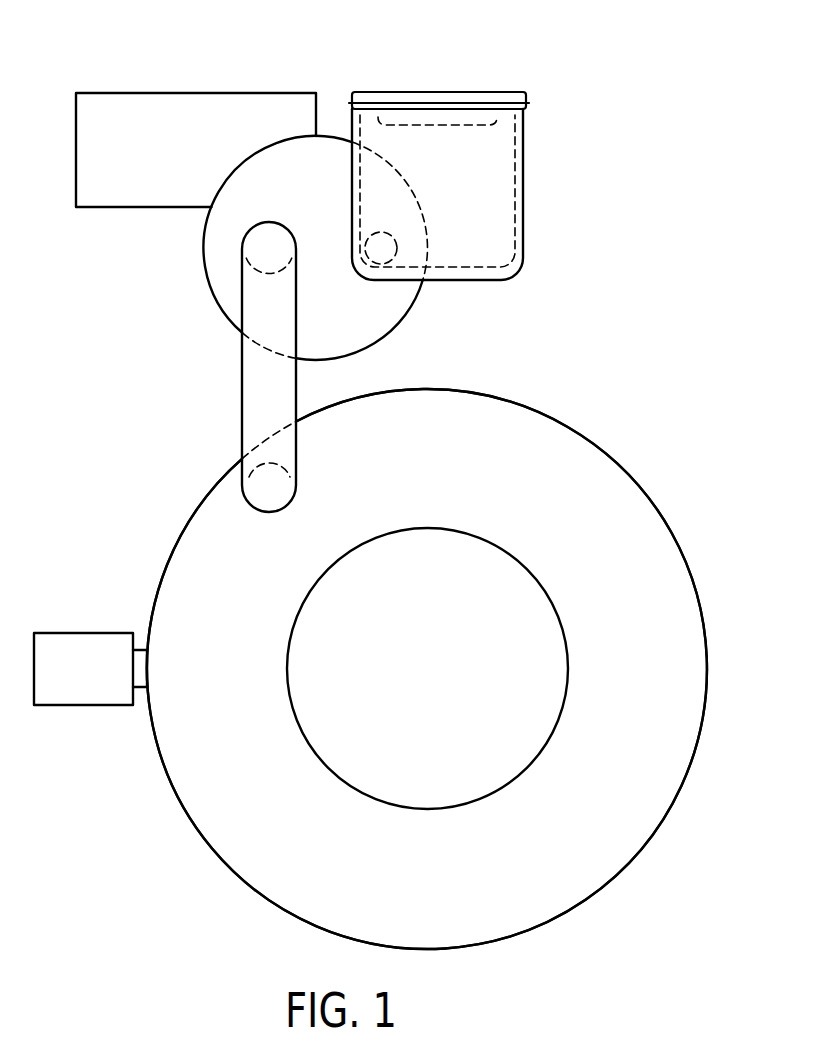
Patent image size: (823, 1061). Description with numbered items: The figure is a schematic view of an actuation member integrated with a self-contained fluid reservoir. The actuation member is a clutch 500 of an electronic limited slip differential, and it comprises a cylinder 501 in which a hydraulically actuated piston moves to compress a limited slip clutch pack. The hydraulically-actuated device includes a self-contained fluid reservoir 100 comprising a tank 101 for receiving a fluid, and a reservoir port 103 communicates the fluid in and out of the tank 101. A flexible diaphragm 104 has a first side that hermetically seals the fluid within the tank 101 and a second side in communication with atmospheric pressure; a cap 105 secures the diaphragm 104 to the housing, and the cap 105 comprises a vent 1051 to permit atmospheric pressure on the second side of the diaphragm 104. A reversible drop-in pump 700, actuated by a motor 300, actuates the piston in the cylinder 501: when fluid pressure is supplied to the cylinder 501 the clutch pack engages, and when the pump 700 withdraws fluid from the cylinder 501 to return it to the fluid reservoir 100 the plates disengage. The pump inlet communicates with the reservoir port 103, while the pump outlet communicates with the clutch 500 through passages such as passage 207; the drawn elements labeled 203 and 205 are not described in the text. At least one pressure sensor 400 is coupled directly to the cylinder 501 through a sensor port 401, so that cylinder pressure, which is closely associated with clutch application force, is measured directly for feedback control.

The fluid reservoir 100 is at (548, 165).
The tank 101 is at (521, 214).
The reservoir port 103 is at (396, 256).
The diaphragm 104 is at (445, 127).
The cap 105 is at (376, 92).
The vent 1051 is at (426, 103).
The upper pivot 203 is at (270, 269).
The link slot 205 is at (242, 416).
The passage 207 is at (256, 463).
The motor 300 is at (148, 92).
The pressure sensor 400 is at (60, 633).
The sensor port 401 is at (143, 653).
The clutch 500 is at (683, 428).
The cylinder 501 is at (664, 515).
The pump 700 is at (204, 257).